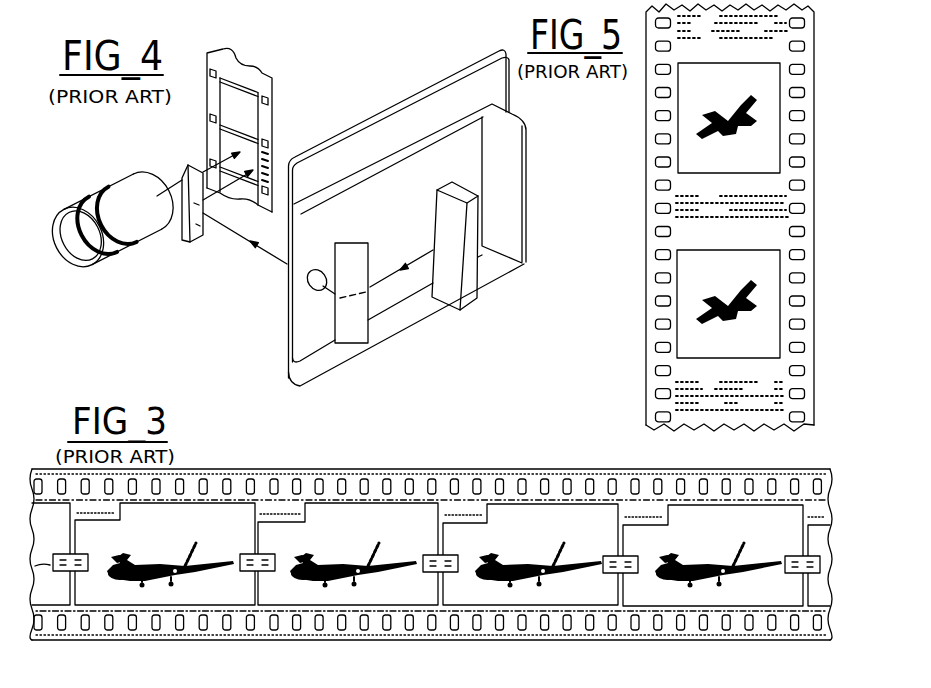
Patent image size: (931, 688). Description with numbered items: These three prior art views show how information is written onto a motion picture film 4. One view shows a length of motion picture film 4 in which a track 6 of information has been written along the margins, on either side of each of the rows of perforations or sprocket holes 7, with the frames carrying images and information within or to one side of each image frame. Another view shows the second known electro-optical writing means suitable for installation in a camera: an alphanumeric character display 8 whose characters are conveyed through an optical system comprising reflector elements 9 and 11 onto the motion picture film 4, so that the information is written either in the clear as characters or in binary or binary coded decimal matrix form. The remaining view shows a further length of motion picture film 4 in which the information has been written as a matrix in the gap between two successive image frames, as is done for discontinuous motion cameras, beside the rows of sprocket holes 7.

In FIG. 4, the motion picture film 4 is at (247, 66).
In FIG. 5, the motion picture film 4 is at (647, 111).
In FIG. 3, the motion picture film 4 is at (325, 638).
In FIG. 3, the track 6 is at (239, 497).
In FIG. 3, the sprocket holes 7 is at (388, 478).
In FIG. 4, the alphanumeric character display 8 is at (468, 292).
In FIG. 4, the reflector element 9 is at (352, 256).
In FIG. 4, the reflector element 11 is at (197, 234).